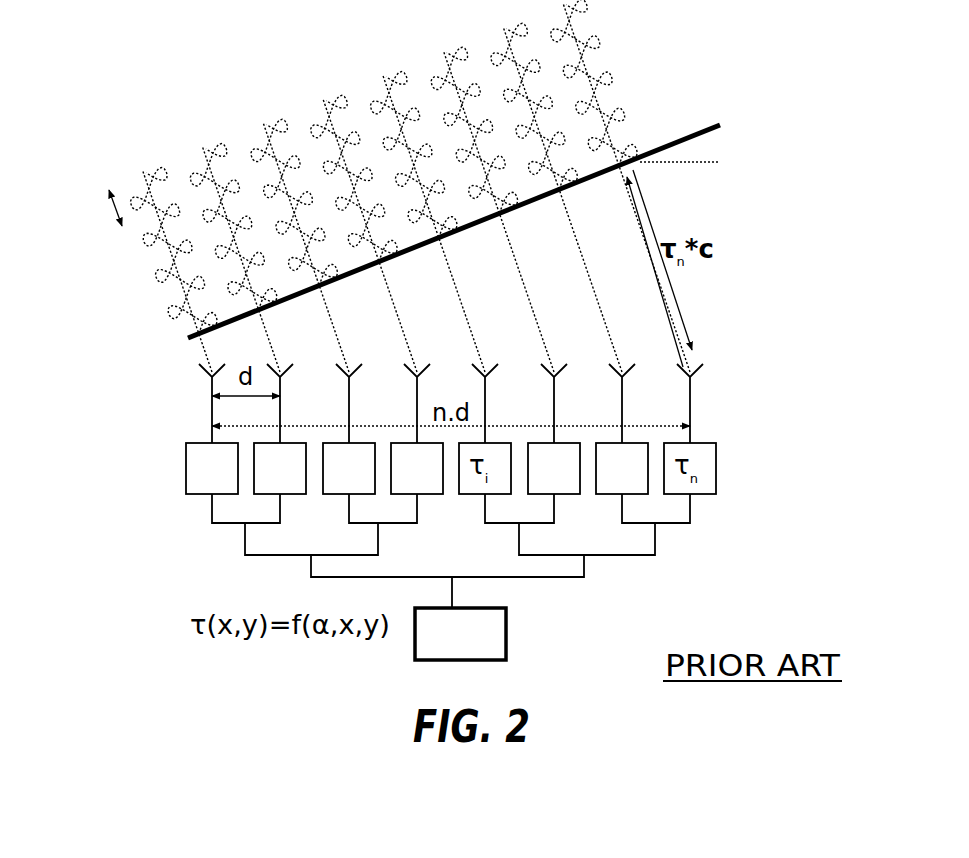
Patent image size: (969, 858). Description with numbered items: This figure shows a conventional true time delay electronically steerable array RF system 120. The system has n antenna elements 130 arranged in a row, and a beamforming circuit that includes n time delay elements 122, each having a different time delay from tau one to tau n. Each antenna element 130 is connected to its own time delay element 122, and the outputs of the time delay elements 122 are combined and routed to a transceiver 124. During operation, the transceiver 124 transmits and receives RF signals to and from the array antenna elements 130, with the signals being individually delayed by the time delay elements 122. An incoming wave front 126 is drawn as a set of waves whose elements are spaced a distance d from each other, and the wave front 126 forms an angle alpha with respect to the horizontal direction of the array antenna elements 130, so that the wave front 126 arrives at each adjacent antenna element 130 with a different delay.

The TTD electronically steerable array RF system 120 is at (127, 120).
The time delay elements 122 is at (188, 460).
The transceiver 124 is at (508, 638).
The wave front 126 is at (708, 128).
The antenna elements 130 is at (693, 406).